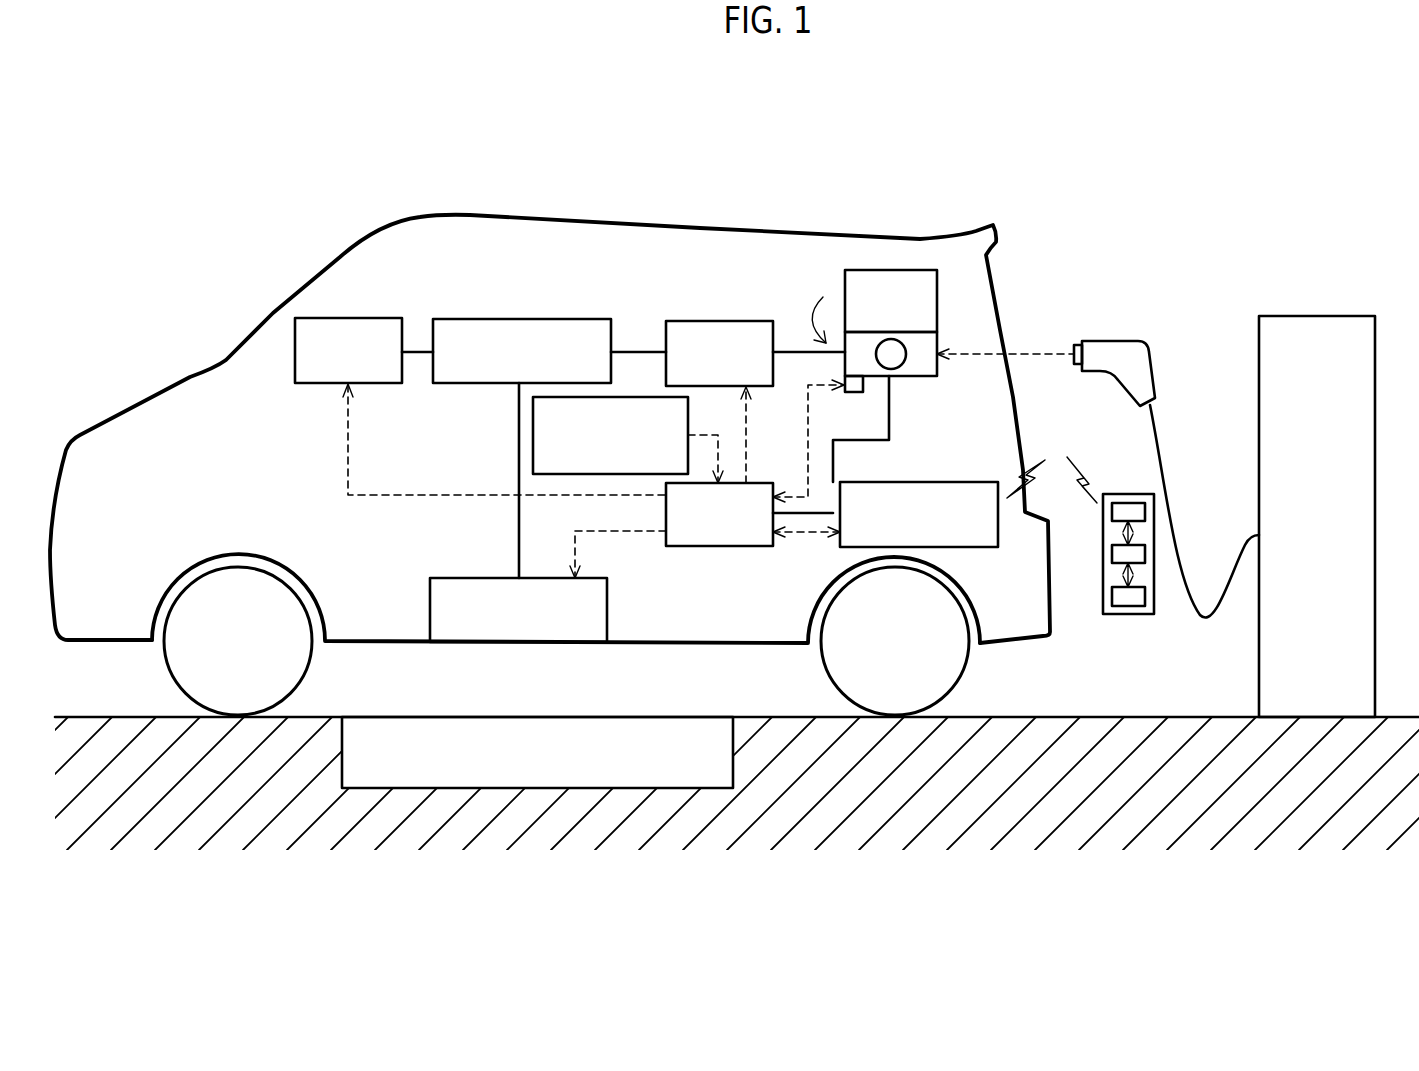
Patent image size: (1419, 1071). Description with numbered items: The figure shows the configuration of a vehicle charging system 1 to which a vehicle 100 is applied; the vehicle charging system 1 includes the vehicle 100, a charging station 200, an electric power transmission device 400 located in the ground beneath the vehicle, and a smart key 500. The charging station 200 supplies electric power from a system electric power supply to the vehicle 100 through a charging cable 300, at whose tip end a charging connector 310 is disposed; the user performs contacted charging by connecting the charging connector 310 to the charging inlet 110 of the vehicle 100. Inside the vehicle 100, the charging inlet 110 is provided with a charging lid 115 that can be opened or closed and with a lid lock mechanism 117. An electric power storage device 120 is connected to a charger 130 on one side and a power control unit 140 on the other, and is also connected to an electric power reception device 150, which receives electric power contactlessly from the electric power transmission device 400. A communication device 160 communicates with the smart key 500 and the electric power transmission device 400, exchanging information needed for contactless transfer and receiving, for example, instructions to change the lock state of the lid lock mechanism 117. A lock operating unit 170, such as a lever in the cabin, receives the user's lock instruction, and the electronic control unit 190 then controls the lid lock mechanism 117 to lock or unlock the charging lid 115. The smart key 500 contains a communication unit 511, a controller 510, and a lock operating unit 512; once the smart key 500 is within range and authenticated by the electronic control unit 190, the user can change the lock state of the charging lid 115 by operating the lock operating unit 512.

The vehicle charging system 1 is at (211, 149).
The vehicle 100 is at (682, 224).
The charging inlet 110 is at (913, 378).
The charging lid 115 is at (920, 270).
The lid lock mechanism 117 is at (857, 392).
The electric power storage device 120 is at (563, 319).
The charger 130 is at (733, 321).
The power control unit 140 is at (370, 318).
The electric power reception device 150 is at (482, 578).
The communication device 160 is at (935, 482).
The lock operating unit 170 is at (533, 434).
The electronic control unit 190 is at (718, 546).
The charging station 200 is at (1322, 316).
The charging cable 300 is at (1158, 420).
The charging connector 310 is at (1107, 341).
The electric power transmission device 400 is at (695, 788).
The smart key 500 is at (1103, 557).
The controller 510 is at (1104, 562).
The communication unit 511 is at (1127, 503).
The lock operating unit 512 is at (1104, 600).